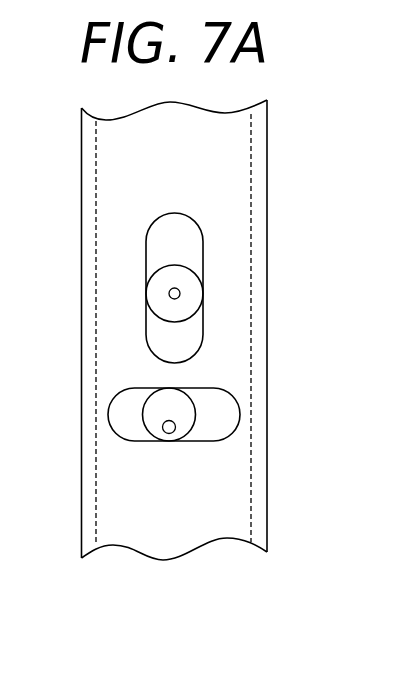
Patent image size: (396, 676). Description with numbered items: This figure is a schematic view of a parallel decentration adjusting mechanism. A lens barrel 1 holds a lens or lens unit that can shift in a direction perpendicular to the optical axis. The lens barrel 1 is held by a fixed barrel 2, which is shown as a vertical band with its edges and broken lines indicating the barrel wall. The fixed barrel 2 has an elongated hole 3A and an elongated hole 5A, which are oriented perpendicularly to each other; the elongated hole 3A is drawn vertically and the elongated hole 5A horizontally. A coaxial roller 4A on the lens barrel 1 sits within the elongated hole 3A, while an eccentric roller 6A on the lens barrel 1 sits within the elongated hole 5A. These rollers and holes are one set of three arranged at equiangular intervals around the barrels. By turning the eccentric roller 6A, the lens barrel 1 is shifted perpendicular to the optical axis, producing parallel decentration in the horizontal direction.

The lens barrel 1 is at (96, 265).
The fixed barrel 2 is at (267, 160).
The elongated hole 3A is at (158, 216).
The coaxial roller 4A is at (175, 265).
The elongated hole 5A is at (210, 388).
The eccentric roller 6A is at (188, 437).